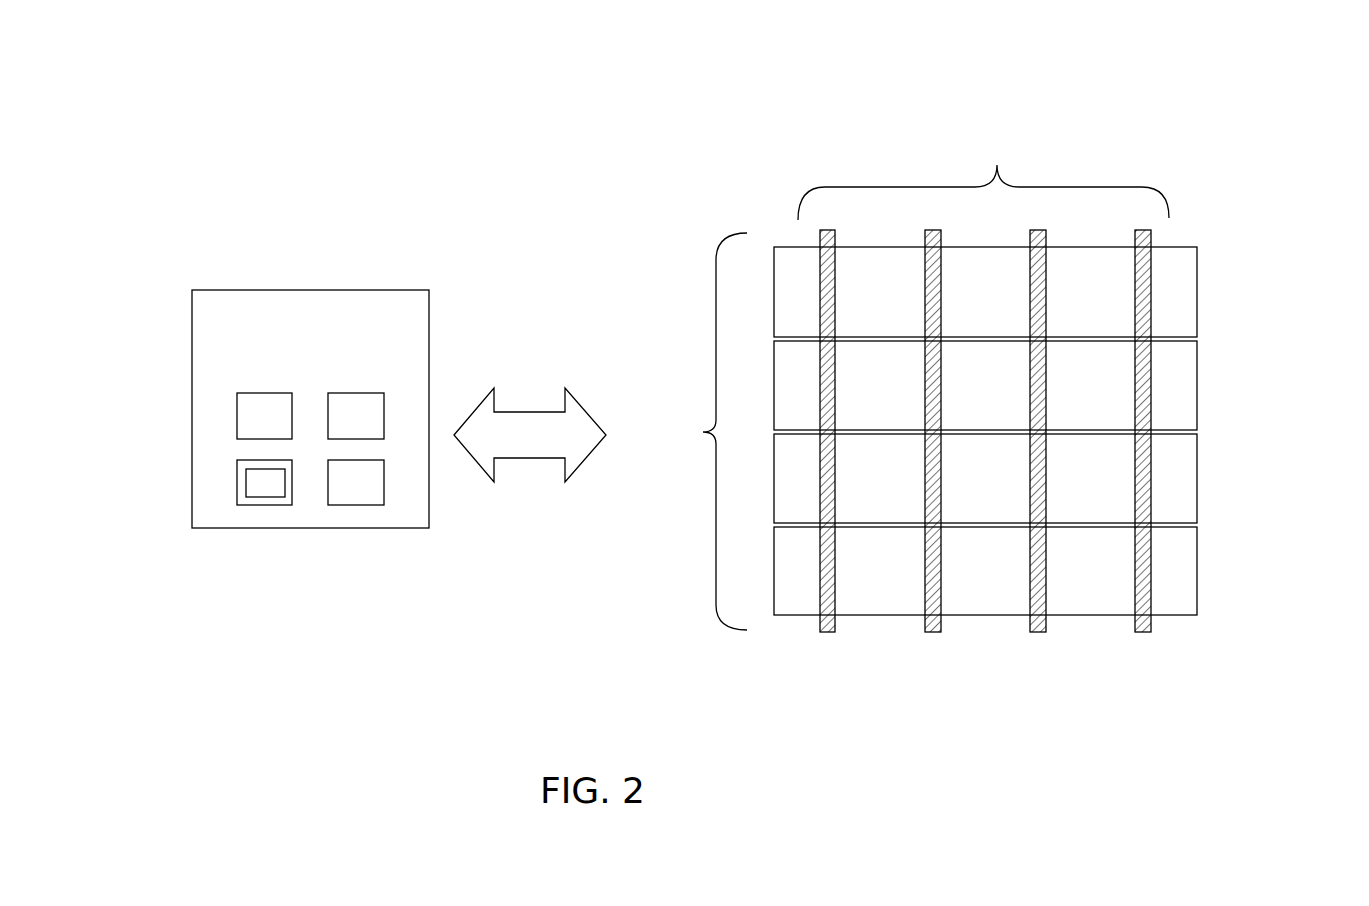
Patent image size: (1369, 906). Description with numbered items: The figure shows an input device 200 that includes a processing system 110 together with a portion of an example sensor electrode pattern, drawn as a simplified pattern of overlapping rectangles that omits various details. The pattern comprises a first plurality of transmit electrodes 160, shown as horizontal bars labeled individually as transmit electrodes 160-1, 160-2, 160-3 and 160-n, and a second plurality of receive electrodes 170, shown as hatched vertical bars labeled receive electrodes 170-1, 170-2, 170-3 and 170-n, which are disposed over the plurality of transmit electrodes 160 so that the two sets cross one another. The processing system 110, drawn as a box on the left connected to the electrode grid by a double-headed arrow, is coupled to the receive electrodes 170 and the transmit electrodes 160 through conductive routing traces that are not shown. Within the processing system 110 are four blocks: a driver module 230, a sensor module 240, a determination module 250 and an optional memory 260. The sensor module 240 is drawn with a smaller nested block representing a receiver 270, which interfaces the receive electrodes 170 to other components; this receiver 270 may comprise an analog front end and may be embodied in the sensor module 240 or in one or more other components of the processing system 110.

The processing system 110 is at (293, 383).
The driver module 230 is at (237, 421).
The sensor module 240 is at (265, 506).
The determination module 250 is at (355, 506).
The memory 260 is at (384, 430).
The receiver 270 is at (237, 480).
The input device 200 is at (1097, 102).
The first plurality of transmit electrodes 160 is at (703, 432).
The transmit electrode 160-1 is at (1177, 288).
The transmit electrode 160-2 is at (1177, 374).
The transmit electrode 160-3 is at (1177, 468).
The transmit electrode 160-n is at (1177, 560).
The second plurality of receive electrodes 170 is at (986, 424).
The receive electrode 170-1 is at (826, 634).
The receive electrode 170-2 is at (932, 634).
The receive electrode 170-3 is at (1037, 634).
The receive electrode 170-n is at (1143, 634).